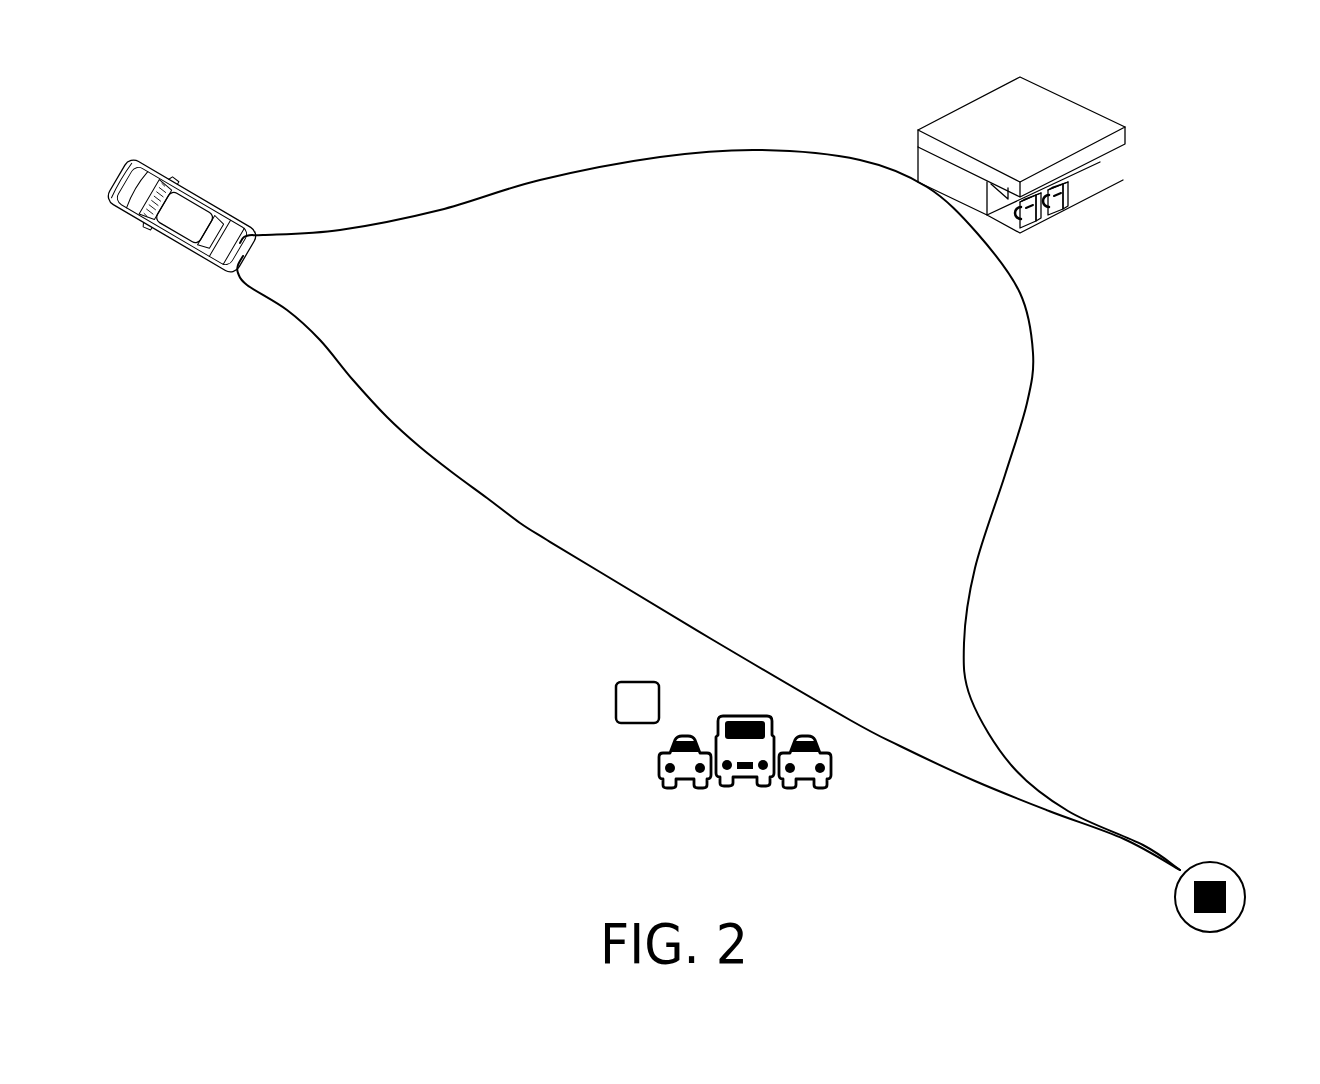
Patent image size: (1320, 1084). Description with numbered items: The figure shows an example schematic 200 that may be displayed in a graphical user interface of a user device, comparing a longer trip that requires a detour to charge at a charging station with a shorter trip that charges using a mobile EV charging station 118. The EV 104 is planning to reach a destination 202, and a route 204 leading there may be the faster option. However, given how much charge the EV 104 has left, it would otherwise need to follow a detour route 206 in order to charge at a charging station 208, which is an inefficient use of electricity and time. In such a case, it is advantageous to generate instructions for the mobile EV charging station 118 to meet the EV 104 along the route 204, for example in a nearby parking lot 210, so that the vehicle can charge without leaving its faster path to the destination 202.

The schematic 200 is at (1225, 78).
The EV 104 is at (180, 182).
The detour route 206 is at (537, 190).
The route 204 is at (503, 508).
The charging station 208 is at (1003, 85).
The destination 202 is at (1226, 875).
The parking lot 210 is at (642, 686).
The mobile EV charging station 118 is at (685, 733).